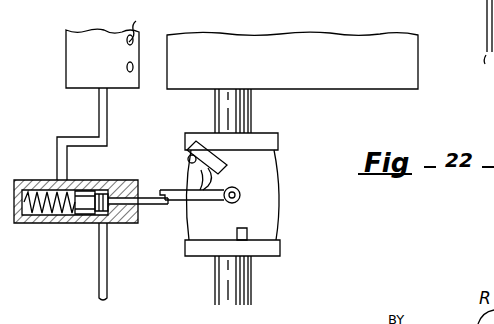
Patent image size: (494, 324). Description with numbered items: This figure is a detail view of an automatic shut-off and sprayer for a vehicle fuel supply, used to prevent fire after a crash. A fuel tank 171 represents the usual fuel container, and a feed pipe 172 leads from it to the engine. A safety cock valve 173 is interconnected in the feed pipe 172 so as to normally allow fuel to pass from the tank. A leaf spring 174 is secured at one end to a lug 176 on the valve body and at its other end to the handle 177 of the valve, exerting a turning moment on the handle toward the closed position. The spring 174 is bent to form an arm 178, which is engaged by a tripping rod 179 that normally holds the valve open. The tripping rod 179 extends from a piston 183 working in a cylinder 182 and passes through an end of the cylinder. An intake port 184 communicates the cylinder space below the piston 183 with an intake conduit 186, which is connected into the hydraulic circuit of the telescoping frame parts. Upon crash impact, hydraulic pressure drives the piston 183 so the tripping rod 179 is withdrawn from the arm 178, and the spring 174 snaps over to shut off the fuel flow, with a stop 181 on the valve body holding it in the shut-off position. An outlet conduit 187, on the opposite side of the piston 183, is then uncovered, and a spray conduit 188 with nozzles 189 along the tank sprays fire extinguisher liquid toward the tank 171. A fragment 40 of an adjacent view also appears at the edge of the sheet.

The fuel tank 171 is at (416, 53).
The feed pipe 172 is at (250, 112).
The safety cock valve 173 is at (279, 177).
The leaf spring 174 is at (188, 162).
The lug 176 is at (199, 141).
The handle 177 is at (184, 202).
The arm 178 is at (168, 190).
The tripping rod 179 is at (150, 206).
The stop 181 is at (249, 234).
The cylinder 182 is at (33, 180).
The piston 183 is at (75, 226).
The intake port 184 is at (92, 226).
The intake conduit 186 is at (100, 290).
The outlet conduit 187 is at (100, 112).
The spray conduit 188 is at (72, 52).
The nozzles 189 is at (135, 26).
The fragment 40 is at (486, 42).